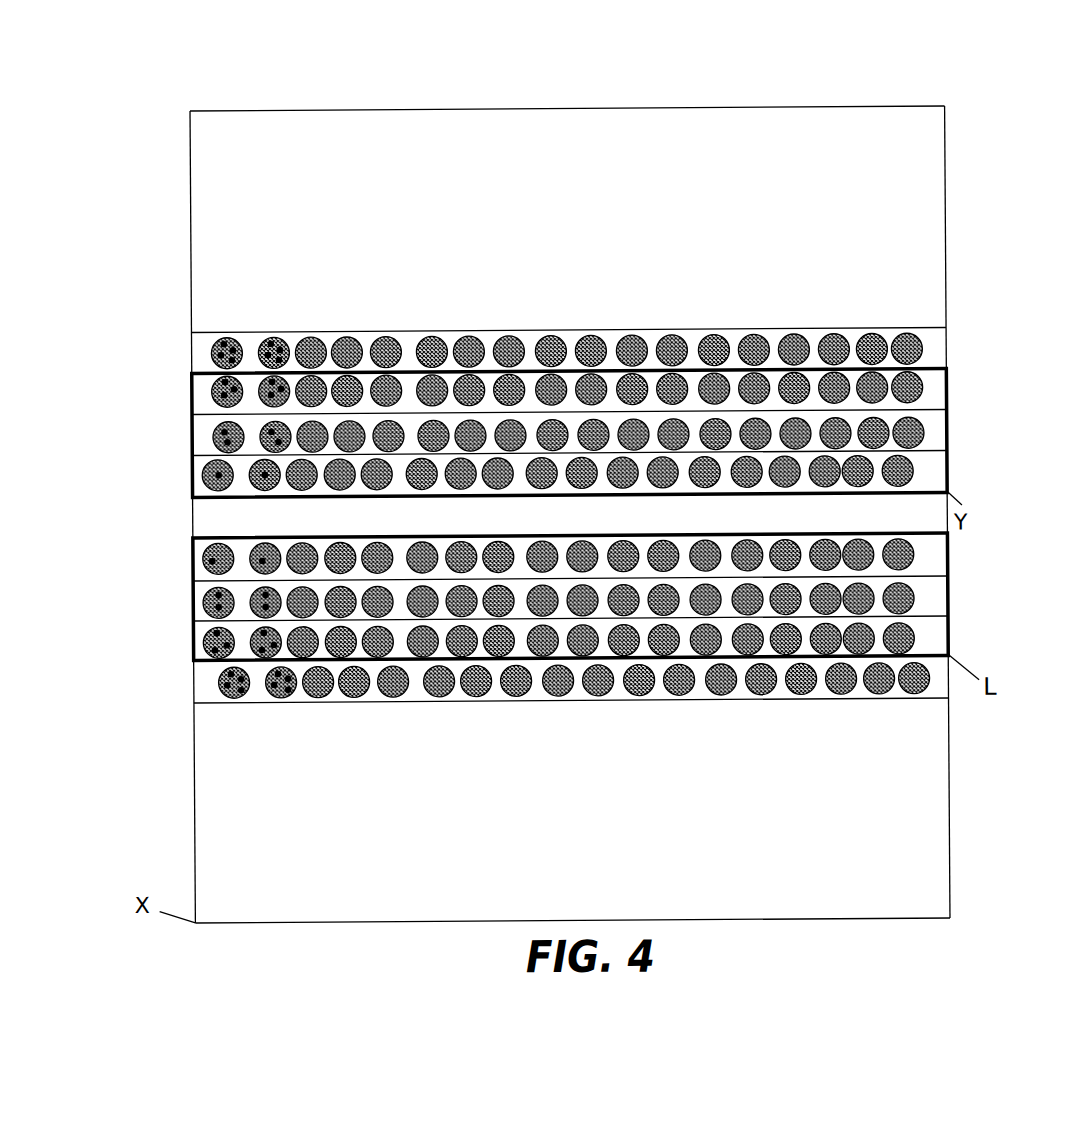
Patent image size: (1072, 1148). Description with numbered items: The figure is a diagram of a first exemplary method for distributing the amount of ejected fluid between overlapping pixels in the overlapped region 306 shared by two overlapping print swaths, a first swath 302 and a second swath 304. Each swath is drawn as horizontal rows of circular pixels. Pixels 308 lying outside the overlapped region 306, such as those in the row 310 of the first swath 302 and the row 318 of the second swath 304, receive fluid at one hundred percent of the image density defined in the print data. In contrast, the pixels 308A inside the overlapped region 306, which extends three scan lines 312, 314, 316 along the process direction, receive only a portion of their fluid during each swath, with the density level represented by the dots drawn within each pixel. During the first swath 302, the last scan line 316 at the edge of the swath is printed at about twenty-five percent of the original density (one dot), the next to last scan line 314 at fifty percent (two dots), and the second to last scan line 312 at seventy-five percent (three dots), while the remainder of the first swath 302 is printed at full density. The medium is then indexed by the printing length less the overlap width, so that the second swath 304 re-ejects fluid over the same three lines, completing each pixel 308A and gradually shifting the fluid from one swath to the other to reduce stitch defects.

The first swath 302 is at (567, 173).
The second swath 304 is at (572, 810).
The overlapped region 306 is at (955, 372).
The pixel 308 is at (384, 304).
The pixel within the overlapped region 308A is at (205, 480).
The row or scan line 310 is at (213, 355).
The second to last row or scan line 312 is at (213, 393).
The next to last row or scan line 314 is at (213, 432).
The last row or scan line 316 is at (217, 470).
The row or scan line 318 is at (215, 680).